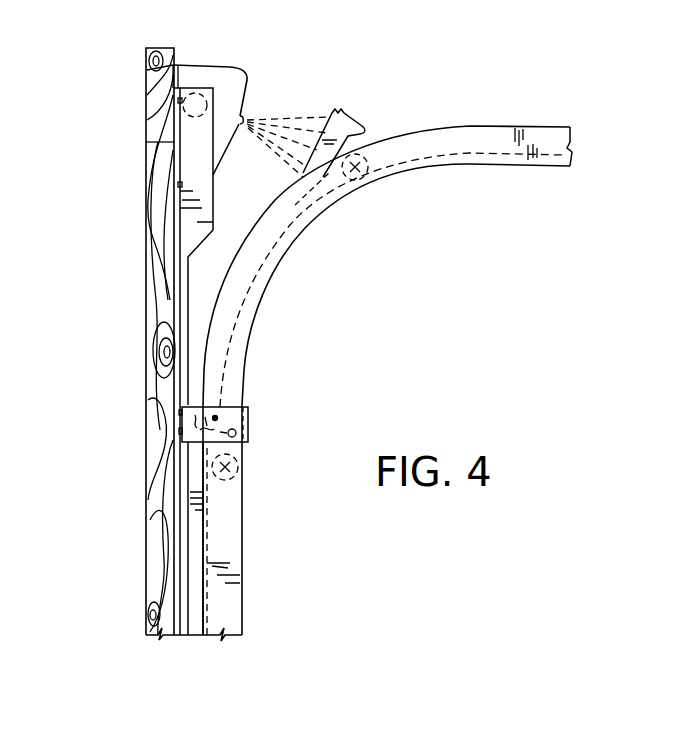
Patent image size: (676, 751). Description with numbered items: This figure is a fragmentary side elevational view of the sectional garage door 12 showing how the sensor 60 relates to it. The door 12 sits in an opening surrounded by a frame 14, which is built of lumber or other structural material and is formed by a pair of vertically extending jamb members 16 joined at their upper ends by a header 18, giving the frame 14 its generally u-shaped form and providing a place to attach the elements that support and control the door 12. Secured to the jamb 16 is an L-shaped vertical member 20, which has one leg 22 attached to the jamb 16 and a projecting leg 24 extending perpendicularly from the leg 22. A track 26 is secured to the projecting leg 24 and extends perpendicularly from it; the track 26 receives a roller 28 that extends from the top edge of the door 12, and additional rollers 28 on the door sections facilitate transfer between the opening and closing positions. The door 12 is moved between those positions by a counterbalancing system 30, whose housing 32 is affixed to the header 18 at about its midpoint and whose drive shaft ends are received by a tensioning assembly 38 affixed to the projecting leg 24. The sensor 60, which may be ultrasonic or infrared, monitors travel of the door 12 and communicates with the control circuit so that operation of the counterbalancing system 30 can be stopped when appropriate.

The sectional garage door 12 is at (328, 118).
The frame 14 is at (147, 523).
The jamb member 16 is at (157, 557).
The header 18 is at (150, 107).
The L-shaped vertical member 20 is at (177, 167).
The leg 22 is at (178, 238).
The projecting leg 24 is at (190, 194).
The track 26 is at (540, 137).
The roller 28 is at (363, 185).
The counterbalancing system 30 is at (252, 107).
The housing 32 is at (228, 67).
The tensioning assembly 38 is at (208, 103).
The sensor 60 is at (239, 128).